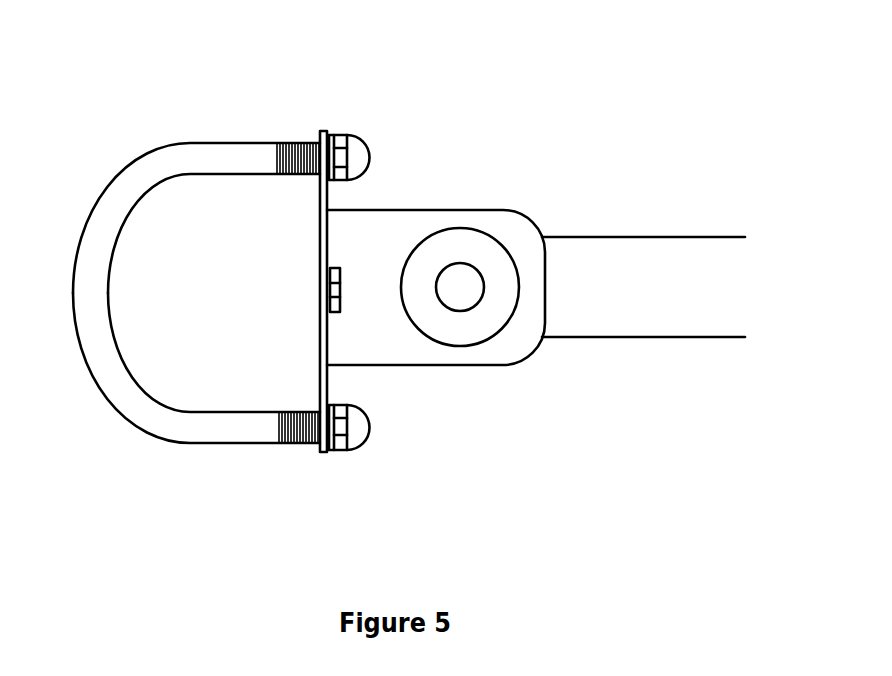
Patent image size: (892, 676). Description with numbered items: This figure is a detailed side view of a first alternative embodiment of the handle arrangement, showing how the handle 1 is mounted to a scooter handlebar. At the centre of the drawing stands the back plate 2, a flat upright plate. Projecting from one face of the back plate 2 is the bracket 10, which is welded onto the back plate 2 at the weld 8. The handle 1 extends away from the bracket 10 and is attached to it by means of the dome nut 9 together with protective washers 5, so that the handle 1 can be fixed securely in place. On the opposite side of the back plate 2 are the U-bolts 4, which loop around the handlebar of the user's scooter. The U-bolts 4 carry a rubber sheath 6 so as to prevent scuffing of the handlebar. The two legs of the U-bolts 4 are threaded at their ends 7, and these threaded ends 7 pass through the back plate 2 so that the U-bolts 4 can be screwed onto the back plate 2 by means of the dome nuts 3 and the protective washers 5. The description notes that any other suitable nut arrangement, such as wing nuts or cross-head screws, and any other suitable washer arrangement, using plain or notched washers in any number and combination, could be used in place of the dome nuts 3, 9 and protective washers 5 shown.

The handle 1 is at (642, 237).
The back plate 2 is at (322, 129).
The dome nuts 3 is at (363, 145).
The U-bolts 4 is at (190, 142).
The protective washers 5 is at (336, 136).
The rubber sheath 6 is at (137, 428).
The threaded ends 7 is at (293, 141).
The weld 8 is at (340, 312).
The dome nut 9 is at (443, 269).
The bracket 10 is at (527, 317).